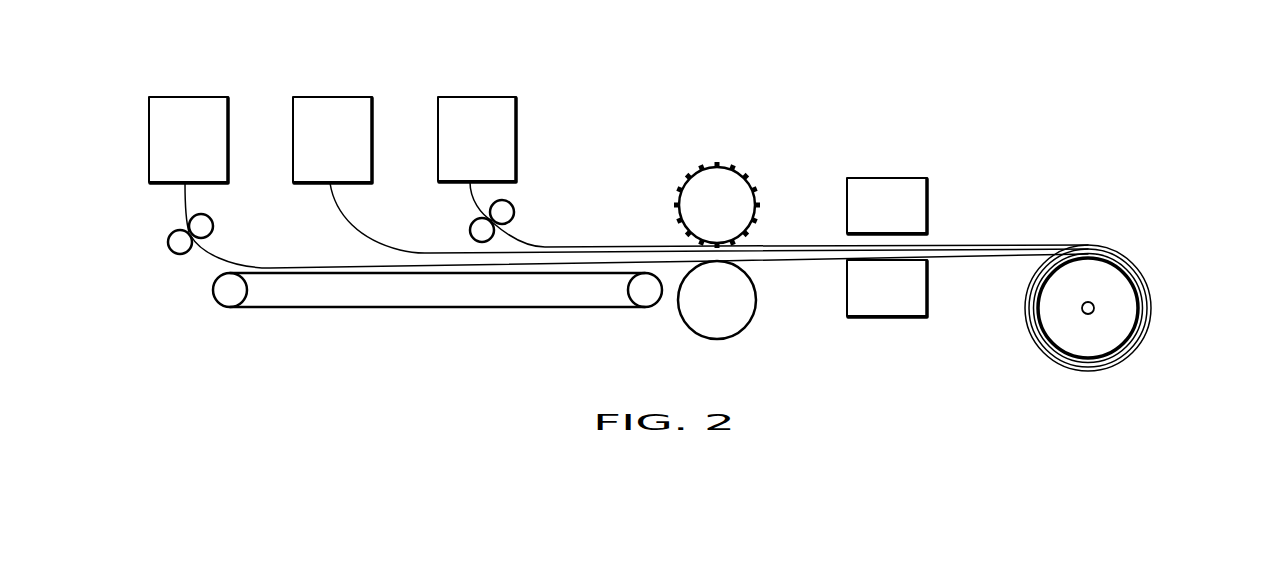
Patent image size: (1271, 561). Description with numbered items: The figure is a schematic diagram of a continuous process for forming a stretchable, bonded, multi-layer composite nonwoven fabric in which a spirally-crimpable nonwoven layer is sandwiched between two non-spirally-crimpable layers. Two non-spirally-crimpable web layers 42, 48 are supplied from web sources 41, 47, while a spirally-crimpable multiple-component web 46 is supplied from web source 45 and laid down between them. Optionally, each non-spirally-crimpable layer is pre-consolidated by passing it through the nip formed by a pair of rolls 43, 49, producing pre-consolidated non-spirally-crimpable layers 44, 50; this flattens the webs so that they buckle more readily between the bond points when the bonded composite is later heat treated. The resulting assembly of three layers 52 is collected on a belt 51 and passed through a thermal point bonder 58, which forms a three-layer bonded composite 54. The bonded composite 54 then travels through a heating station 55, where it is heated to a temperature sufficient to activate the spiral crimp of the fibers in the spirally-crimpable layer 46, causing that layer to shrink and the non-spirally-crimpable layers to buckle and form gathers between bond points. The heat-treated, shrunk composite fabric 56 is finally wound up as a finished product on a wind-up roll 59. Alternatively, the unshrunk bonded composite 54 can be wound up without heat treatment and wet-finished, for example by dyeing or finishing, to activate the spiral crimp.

The web source 41 is at (175, 97).
The non-spirally-crimpable web layer 42 is at (184, 201).
The pair of rolls 43 is at (170, 261).
The pre-consolidated non-spirally-crimpable layer 44 is at (233, 252).
The web source 45 is at (320, 97).
The spirally-crimpable multiple-component web 46 is at (356, 225).
The web source 47 is at (470, 97).
The non-spirally-crimpable web layer 48 is at (474, 201).
The pair of rolls 49 is at (521, 195).
The pre-consolidated non-spirally-crimpable layer 50 is at (524, 243).
The belt 51 is at (357, 310).
The assembly of three layers 52 is at (655, 244).
The three-layer bonded composite 54 is at (810, 245).
The heating station 55 is at (886, 158).
The heat-treated, shrunk composite fabric 56 is at (1090, 232).
The thermal point bonder 58 is at (742, 147).
The wind-up roll 59 is at (1112, 320).